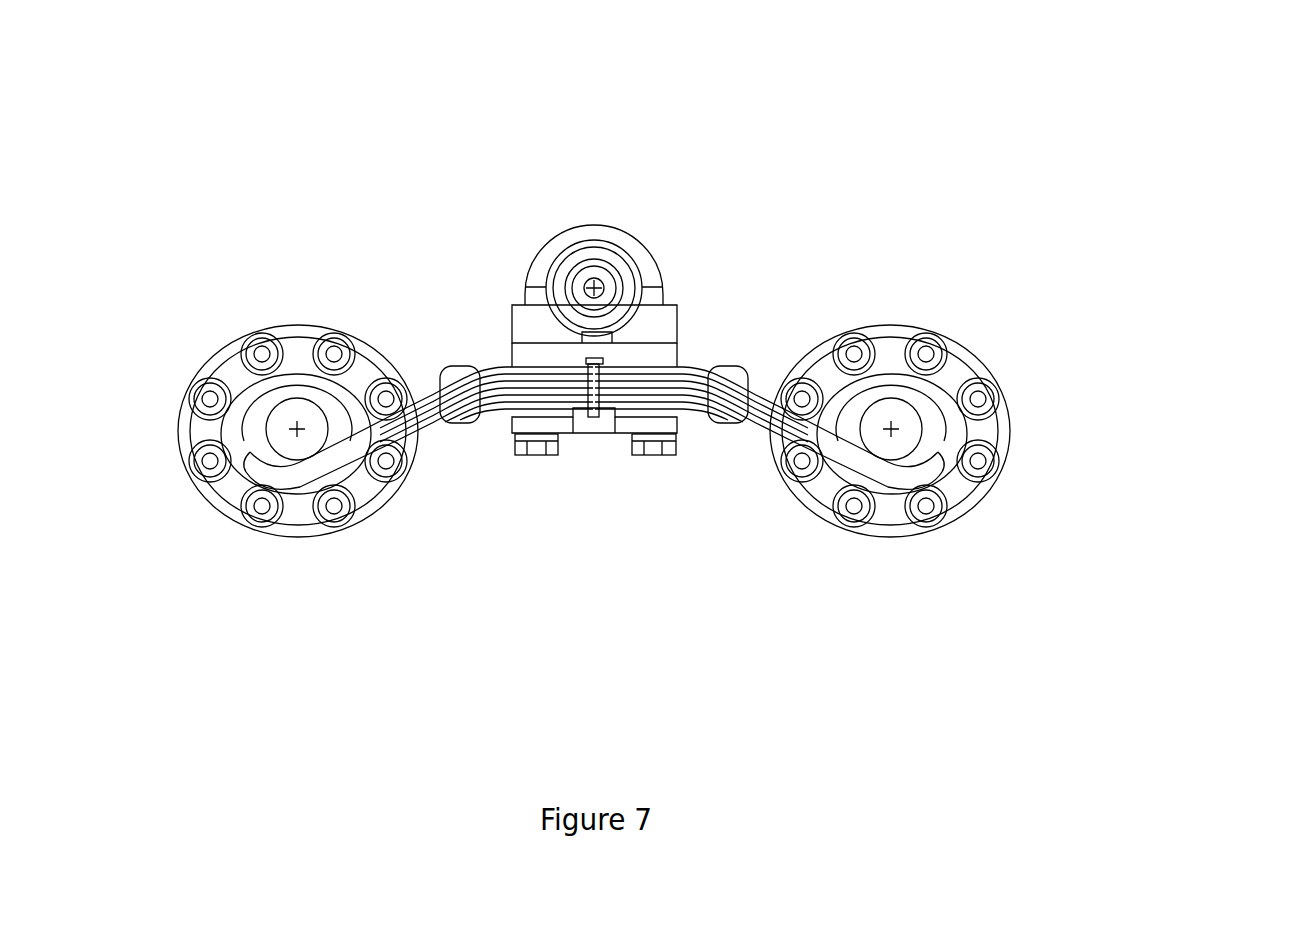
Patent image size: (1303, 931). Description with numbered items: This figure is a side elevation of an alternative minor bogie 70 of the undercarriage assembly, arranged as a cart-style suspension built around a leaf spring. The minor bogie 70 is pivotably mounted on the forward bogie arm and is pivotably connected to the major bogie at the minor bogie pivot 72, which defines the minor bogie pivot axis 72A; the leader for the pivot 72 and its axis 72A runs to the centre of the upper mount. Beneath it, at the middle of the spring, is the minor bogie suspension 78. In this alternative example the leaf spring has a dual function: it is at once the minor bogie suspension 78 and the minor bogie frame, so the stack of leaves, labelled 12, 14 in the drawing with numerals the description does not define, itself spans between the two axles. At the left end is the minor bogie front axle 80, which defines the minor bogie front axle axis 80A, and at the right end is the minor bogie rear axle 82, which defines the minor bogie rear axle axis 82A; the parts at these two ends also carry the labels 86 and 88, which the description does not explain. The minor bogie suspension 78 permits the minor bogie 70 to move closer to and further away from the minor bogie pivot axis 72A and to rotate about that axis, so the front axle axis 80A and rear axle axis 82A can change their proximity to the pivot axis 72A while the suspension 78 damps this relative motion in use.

The minor bogie 70 is at (860, 133).
The minor bogie pivot 72 is at (640, 238).
The minor bogie pivot axis 72A is at (594, 288).
The minor bogie suspension 78 is at (637, 380).
The leaf spring 12 is at (637, 355).
The leaf spring leaves 14 is at (693, 377).
The minor bogie front axle 80 is at (283, 451).
The minor bogie front axle axis 80A is at (283, 451).
The first hub bolt pattern 86 is at (297, 429).
The minor bogie rear axle 82 is at (1011, 418).
The minor bogie rear axle axis 82A is at (1011, 418).
The second hub bolt pattern 88 is at (891, 429).